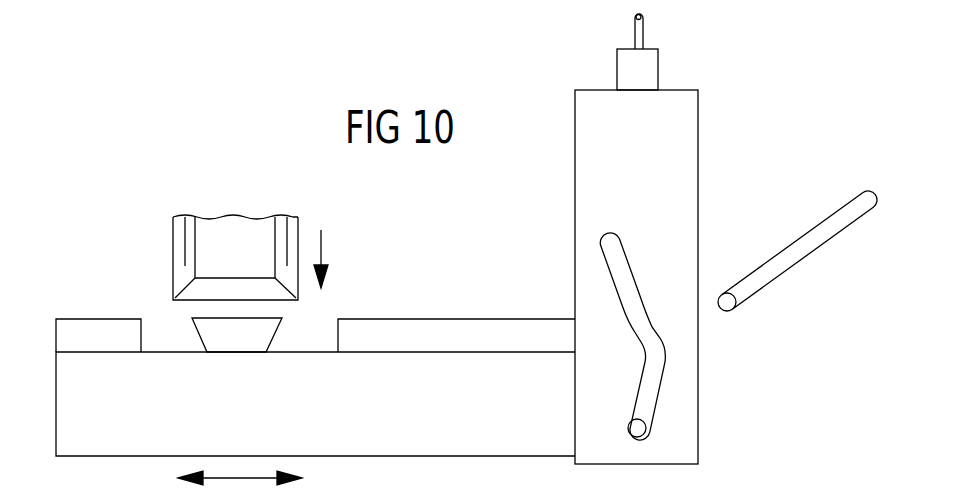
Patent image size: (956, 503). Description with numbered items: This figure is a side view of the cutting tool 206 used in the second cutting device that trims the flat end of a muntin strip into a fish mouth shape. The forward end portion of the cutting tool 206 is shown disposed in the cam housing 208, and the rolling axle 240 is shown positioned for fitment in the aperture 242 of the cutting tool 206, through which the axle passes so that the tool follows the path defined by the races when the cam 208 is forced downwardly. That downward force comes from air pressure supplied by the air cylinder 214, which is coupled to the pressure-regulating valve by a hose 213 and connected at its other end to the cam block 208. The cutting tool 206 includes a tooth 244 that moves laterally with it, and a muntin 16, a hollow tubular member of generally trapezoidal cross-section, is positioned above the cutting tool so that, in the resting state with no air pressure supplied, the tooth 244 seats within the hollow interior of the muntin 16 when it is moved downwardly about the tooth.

The muntin 16 is at (175, 240).
The cutting tool 206 is at (109, 443).
The cam 208 is at (684, 450).
The hose 213 is at (643, 30).
The air cylinder 214 is at (617, 58).
The rolling axle 240 is at (812, 237).
The aperture 242 is at (625, 430).
The tooth 244 is at (203, 325).